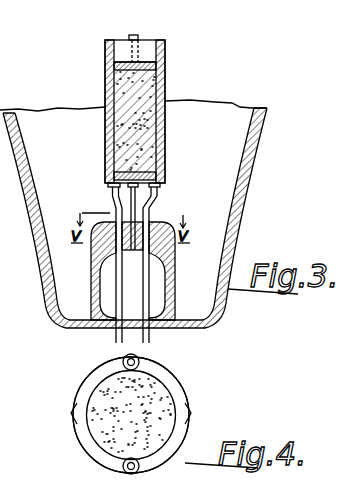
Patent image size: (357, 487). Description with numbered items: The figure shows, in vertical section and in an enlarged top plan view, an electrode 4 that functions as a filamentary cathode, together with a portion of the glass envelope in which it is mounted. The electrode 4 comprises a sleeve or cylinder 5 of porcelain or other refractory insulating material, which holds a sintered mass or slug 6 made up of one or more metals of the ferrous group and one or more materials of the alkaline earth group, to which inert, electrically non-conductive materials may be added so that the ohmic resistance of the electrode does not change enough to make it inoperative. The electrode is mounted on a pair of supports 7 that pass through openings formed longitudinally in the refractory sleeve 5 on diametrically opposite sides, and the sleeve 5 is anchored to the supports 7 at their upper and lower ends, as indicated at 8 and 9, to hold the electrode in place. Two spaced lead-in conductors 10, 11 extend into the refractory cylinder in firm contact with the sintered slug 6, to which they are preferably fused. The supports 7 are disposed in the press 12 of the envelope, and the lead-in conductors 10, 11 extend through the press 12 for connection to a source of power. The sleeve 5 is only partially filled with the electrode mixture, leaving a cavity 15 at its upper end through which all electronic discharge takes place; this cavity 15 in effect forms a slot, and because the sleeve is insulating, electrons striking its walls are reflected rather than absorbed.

In FIG. 3, the electrode 4 is at (190, 84).
In FIG. 4, the electrode 4 is at (215, 415).
In FIG. 3, the sleeve or cylinder 5 is at (112, 63).
In FIG. 4, the sleeve or cylinder 5 is at (78, 390).
In FIG. 3, the sintered mass or slug 6 is at (116, 72).
In FIG. 4, the sintered mass or slug 6 is at (131, 415).
In FIG. 3, the supports 7 is at (152, 205).
In FIG. 4, the supports 7 is at (140, 362).
In FIG. 3, the anchoring point 8 is at (140, 34).
In FIG. 3, the anchoring point 9 is at (140, 196).
In FIG. 3, the lead-in conductor 10 is at (112, 195).
In FIG. 4, the lead-in conductor 10 is at (76, 418).
In FIG. 3, the lead-in conductor 11 is at (157, 213).
In FIG. 4, the lead-in conductor 11 is at (182, 409).
In FIG. 3, the press 12 is at (175, 258).
In FIG. 3, the cavity 15 is at (122, 52).